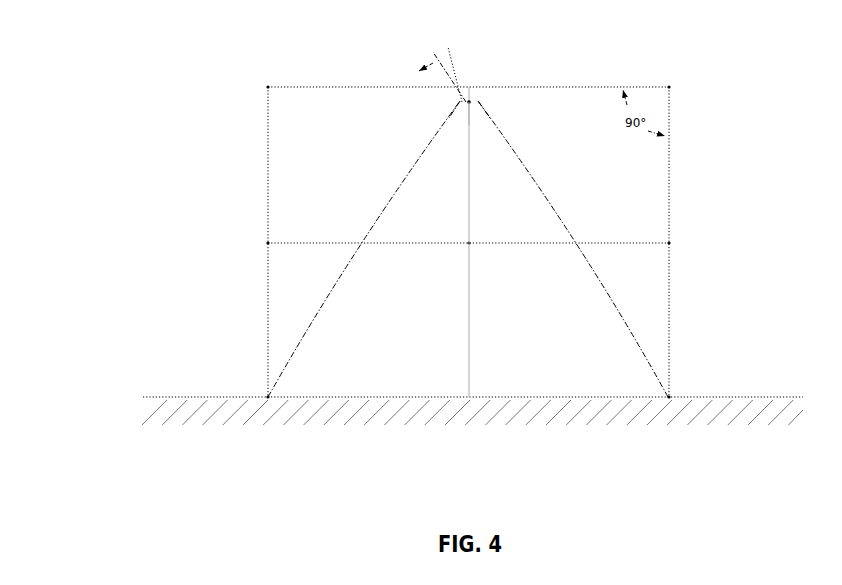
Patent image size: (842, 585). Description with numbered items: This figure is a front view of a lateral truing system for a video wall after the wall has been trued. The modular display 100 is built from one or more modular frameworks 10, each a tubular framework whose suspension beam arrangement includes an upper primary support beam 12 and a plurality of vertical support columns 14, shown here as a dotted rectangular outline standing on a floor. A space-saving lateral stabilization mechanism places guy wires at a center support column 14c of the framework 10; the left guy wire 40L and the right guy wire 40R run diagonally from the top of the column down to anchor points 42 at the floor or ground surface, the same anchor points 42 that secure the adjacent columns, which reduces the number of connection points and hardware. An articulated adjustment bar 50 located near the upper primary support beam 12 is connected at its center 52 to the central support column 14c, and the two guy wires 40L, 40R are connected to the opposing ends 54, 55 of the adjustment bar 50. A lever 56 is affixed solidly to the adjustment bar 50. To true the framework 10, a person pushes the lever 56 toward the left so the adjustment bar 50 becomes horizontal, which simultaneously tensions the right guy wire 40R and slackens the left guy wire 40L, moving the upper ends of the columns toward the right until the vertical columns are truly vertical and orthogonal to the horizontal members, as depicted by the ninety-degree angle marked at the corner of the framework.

The modular display 100 is at (116, 158).
The modular framework 10 is at (256, 207).
The primary support beam 12 is at (296, 85).
The support column 14 is at (473, 321).
The center support column 14c is at (473, 201).
The left guy wire 40L is at (385, 206).
The right guy wire 40R is at (562, 204).
The anchor point 42 is at (268, 399).
The articulated adjustment bar 50 is at (479, 97).
The center of the adjustment bar 52 is at (468, 110).
The end of the adjustment bar 54 is at (458, 101).
The end of the adjustment bar 55 is at (481, 101).
The lever 56 is at (455, 57).